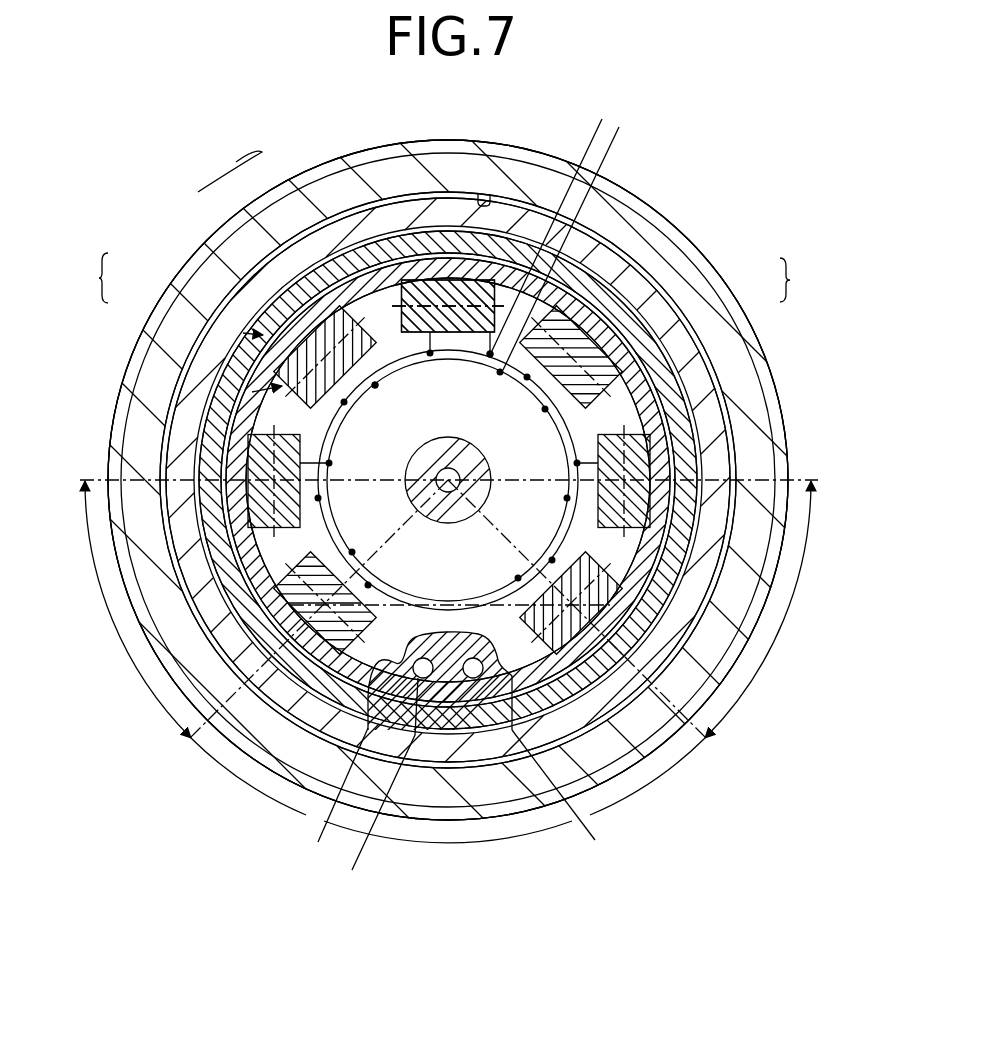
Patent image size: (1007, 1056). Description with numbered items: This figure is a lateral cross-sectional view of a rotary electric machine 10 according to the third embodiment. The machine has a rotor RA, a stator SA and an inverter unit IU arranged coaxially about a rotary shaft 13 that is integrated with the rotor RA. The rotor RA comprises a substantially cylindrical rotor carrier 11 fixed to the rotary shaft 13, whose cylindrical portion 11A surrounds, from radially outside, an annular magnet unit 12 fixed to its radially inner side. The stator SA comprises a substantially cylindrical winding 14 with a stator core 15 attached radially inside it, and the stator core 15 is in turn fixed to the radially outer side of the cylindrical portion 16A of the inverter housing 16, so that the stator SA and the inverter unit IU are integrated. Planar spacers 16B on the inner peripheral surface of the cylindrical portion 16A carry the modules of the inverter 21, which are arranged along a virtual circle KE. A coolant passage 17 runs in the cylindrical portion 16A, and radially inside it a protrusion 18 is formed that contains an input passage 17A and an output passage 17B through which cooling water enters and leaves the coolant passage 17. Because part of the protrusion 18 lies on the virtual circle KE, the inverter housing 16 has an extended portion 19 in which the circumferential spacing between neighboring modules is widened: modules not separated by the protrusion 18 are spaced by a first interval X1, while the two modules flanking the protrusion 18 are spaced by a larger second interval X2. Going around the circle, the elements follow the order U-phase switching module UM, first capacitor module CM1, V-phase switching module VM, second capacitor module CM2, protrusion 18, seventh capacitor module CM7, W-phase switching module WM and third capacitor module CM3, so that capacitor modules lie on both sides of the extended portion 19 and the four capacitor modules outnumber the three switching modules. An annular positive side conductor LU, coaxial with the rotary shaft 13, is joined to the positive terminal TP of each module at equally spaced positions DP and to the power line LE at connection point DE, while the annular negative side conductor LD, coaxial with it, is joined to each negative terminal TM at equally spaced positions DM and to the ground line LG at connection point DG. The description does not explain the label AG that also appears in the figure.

The rotary electric machine 10 is at (713, 135).
The rotor carrier 11 is at (721, 270).
The cylindrical portion 11A is at (657, 220).
The magnet unit 12 is at (750, 378).
The rotary shaft 13 is at (655, 290).
The winding 14 is at (312, 258).
The stator core 15 is at (262, 276).
The inverter housing 16 is at (258, 338).
The cylindrical portion 16A is at (398, 248).
The spacer 16B is at (460, 250).
The coolant passage 17 is at (390, 252).
The input passage 17A is at (373, 787).
The output passage 17B is at (564, 798).
The protrusion 18 is at (413, 750).
The extended portion 19 is at (712, 826).
The inverter 21 is at (265, 352).
The first capacitor module CM1 is at (407, 300).
The second capacitor module CM2 is at (358, 614).
The third capacitor module CM3 is at (592, 384).
The seventh capacitor module CM7 is at (533, 632).
The U-phase switching module UM is at (403, 325).
The V-phase switching module VM is at (281, 530).
The W-phase switching module WM is at (627, 532).
The negative terminal TM is at (428, 353).
The positions DM is at (428, 362).
The positive terminal TP is at (447, 360).
The positions DP is at (486, 372).
The connection point DG is at (490, 370).
The connection point DE is at (527, 382).
The positive side conductor LU is at (345, 422).
The negative side conductor LD is at (337, 430).
The ground line LG is at (599, 130).
The power line LE is at (620, 136).
The virtual circle KE is at (262, 374).
The air gap AG is at (490, 196).
The stator SA is at (230, 169).
The inverter unit IU is at (93, 278).
The rotor RA is at (800, 280).
The first interval X1 is at (330, 548).
The second interval X2 is at (452, 605).